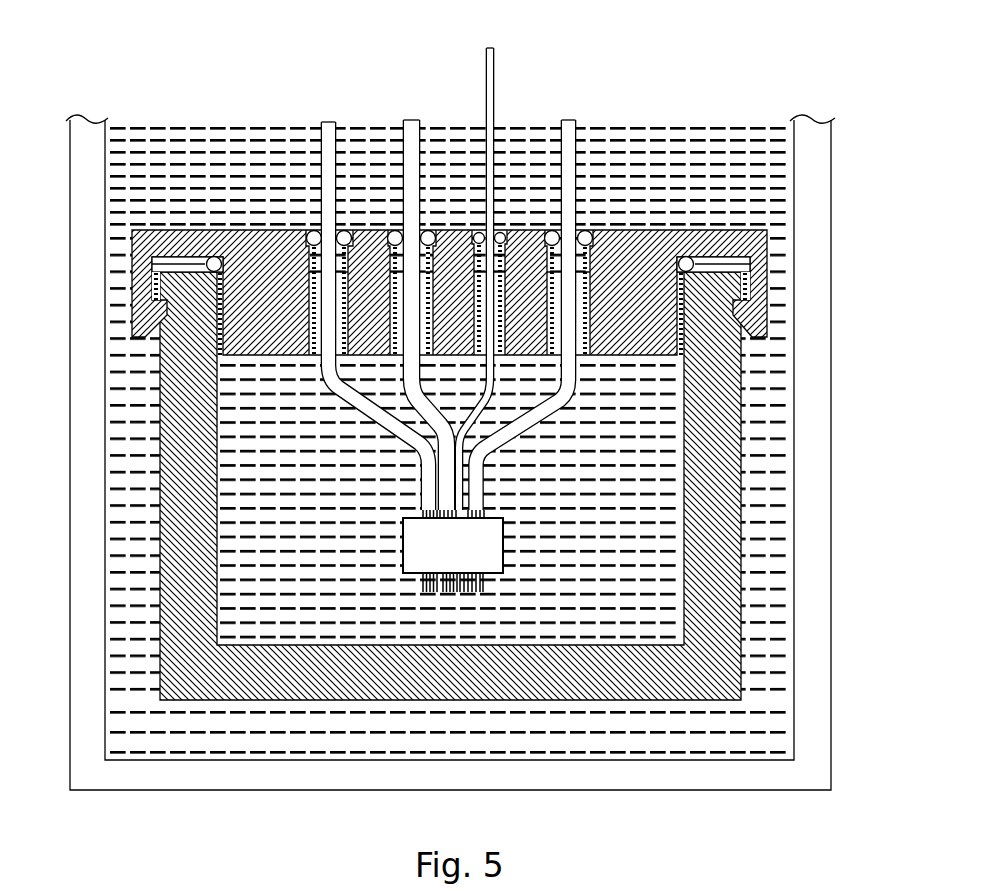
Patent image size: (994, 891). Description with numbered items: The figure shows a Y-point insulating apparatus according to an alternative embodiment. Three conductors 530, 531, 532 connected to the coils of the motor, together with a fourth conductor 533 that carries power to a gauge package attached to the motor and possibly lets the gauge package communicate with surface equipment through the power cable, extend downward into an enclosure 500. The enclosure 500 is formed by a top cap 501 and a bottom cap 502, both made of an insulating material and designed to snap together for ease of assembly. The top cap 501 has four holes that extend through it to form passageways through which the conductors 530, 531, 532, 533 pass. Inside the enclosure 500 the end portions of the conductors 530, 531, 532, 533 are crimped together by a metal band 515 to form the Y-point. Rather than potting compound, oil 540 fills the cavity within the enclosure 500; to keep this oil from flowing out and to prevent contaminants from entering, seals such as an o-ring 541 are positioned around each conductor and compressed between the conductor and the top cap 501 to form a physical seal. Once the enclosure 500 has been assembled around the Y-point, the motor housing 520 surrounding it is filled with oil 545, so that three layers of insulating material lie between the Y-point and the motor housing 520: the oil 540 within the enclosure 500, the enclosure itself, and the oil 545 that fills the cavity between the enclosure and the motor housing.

The enclosure 500 is at (479, 446).
The top cap 501 is at (767, 239).
The bottom cap 502 is at (741, 463).
The metal band 515 is at (502, 548).
The outer container 520 is at (828, 663).
The conductor 530 is at (322, 136).
The conductor 531 is at (405, 128).
The conductor 532 is at (576, 137).
The fourth conductor 533 is at (487, 86).
The oil 540 is at (322, 496).
The o-ring 541 is at (313, 230).
The oil 545 is at (377, 746).